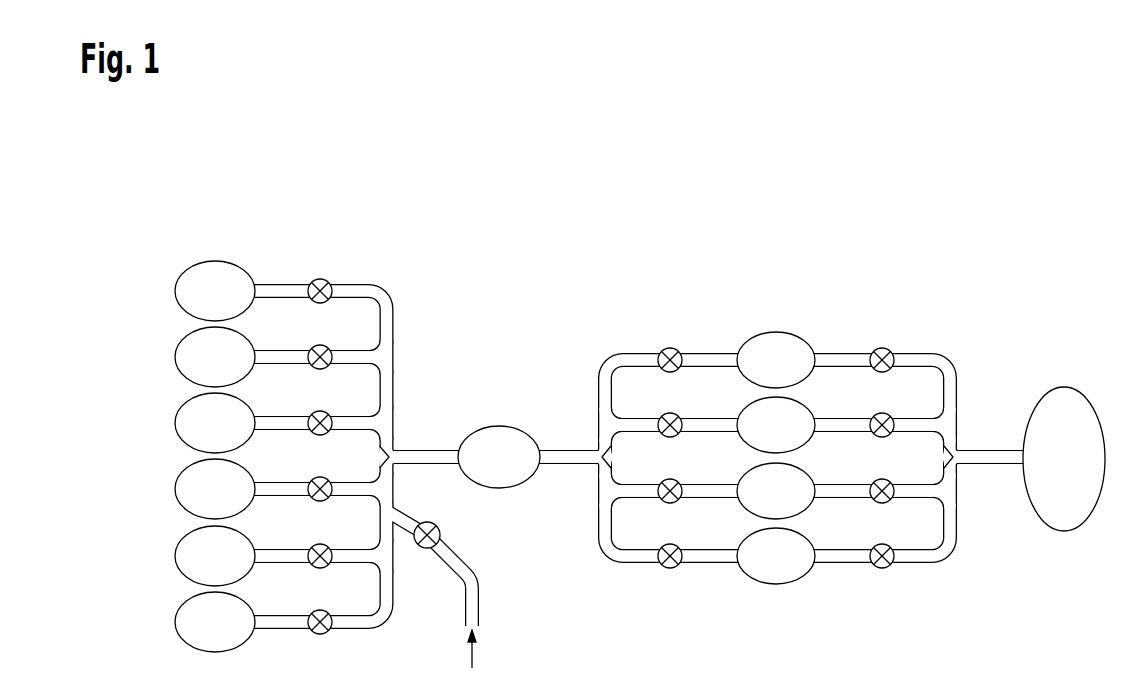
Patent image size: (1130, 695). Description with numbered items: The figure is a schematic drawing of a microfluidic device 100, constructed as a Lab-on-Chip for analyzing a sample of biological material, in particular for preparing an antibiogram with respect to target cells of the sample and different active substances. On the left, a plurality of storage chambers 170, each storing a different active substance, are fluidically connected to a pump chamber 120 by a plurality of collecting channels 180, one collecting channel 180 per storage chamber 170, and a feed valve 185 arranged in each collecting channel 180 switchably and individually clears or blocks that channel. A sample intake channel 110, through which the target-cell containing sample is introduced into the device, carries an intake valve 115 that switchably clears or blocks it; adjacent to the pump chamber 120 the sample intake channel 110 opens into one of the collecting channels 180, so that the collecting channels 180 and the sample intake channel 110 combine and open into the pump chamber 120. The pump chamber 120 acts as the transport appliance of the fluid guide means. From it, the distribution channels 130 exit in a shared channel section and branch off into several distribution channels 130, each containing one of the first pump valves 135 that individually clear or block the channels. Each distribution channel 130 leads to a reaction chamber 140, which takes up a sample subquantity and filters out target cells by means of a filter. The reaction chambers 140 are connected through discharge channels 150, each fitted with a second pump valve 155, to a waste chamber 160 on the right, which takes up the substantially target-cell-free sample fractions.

The microfluidic device 100 is at (171, 209).
The sample intake channel 110 is at (478, 603).
The intake valve 115 is at (438, 525).
The pump chamber 120 is at (502, 426).
The distribution channels 130 is at (713, 352).
The first pump valves 135 is at (661, 351).
The reaction chambers 140 is at (759, 374).
The discharge channels 150 is at (840, 352).
The second pump valves 155 is at (891, 351).
The waste chamber 160 is at (1063, 533).
The storage chambers 170 is at (197, 305).
The collecting channels 180 is at (281, 283).
The feed valves 185 is at (329, 282).